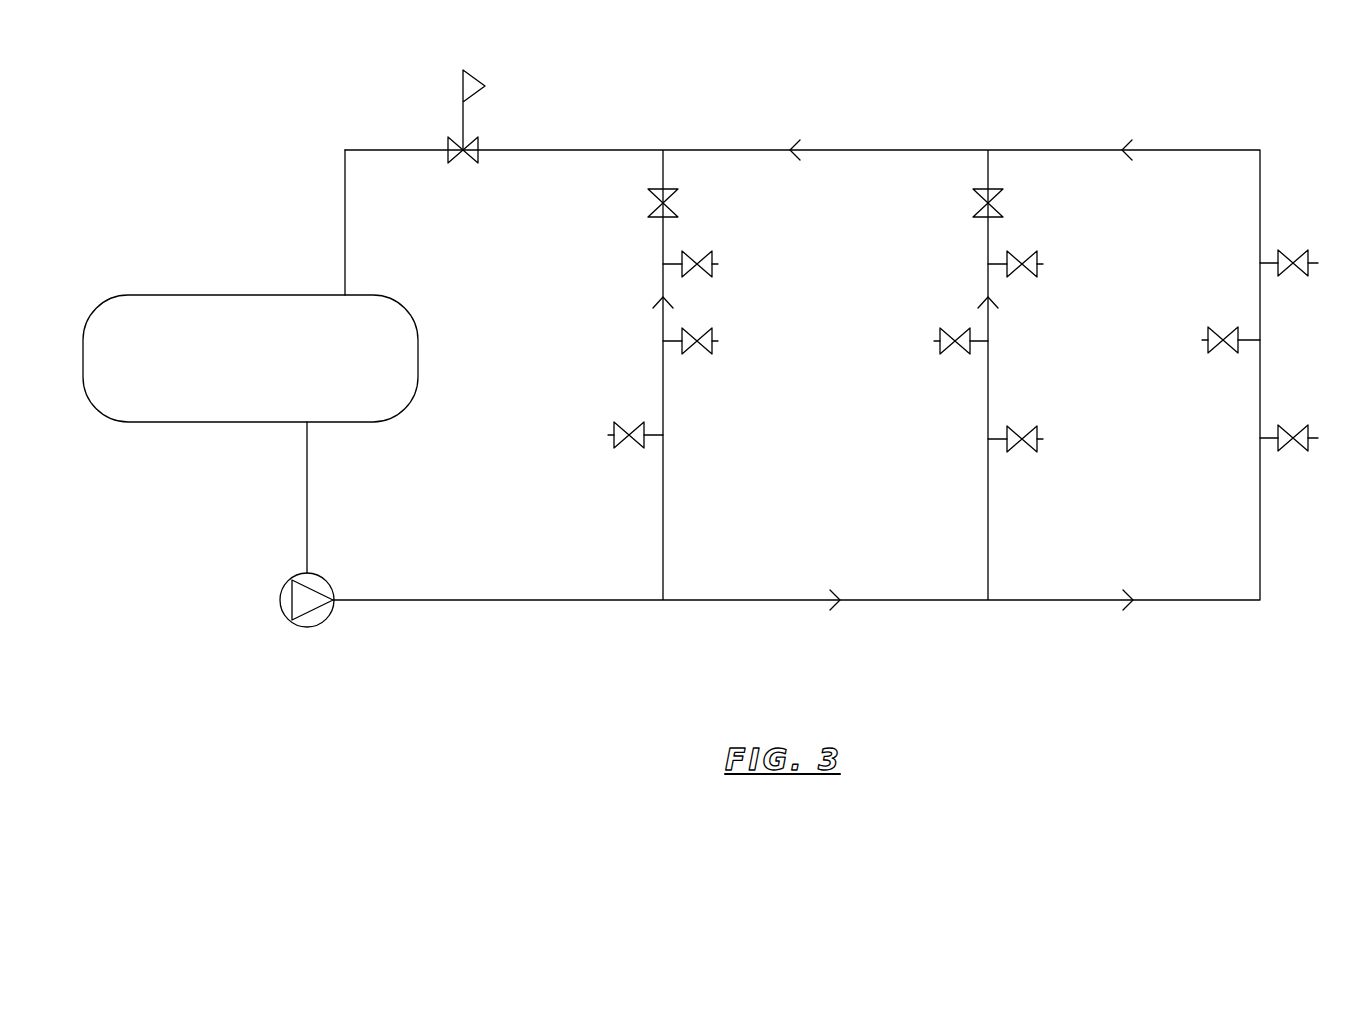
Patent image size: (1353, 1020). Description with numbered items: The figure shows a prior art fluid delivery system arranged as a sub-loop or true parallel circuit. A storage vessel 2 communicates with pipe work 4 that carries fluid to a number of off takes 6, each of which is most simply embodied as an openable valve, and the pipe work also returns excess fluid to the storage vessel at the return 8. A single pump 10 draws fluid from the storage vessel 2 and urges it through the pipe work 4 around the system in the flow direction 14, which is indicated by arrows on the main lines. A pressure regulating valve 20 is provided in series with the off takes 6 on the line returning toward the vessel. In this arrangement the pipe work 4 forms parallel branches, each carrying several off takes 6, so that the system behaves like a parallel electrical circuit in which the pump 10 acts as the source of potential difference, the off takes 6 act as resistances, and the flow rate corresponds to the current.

The storage vessel 2 is at (215, 422).
The pipe work 4 is at (545, 150).
The off takes 6 is at (610, 433).
The return to storage vessel 8 is at (345, 290).
The pump 10 is at (282, 588).
The flow direction 14 is at (790, 148).
The pressure regulating valve 20 is at (450, 148).